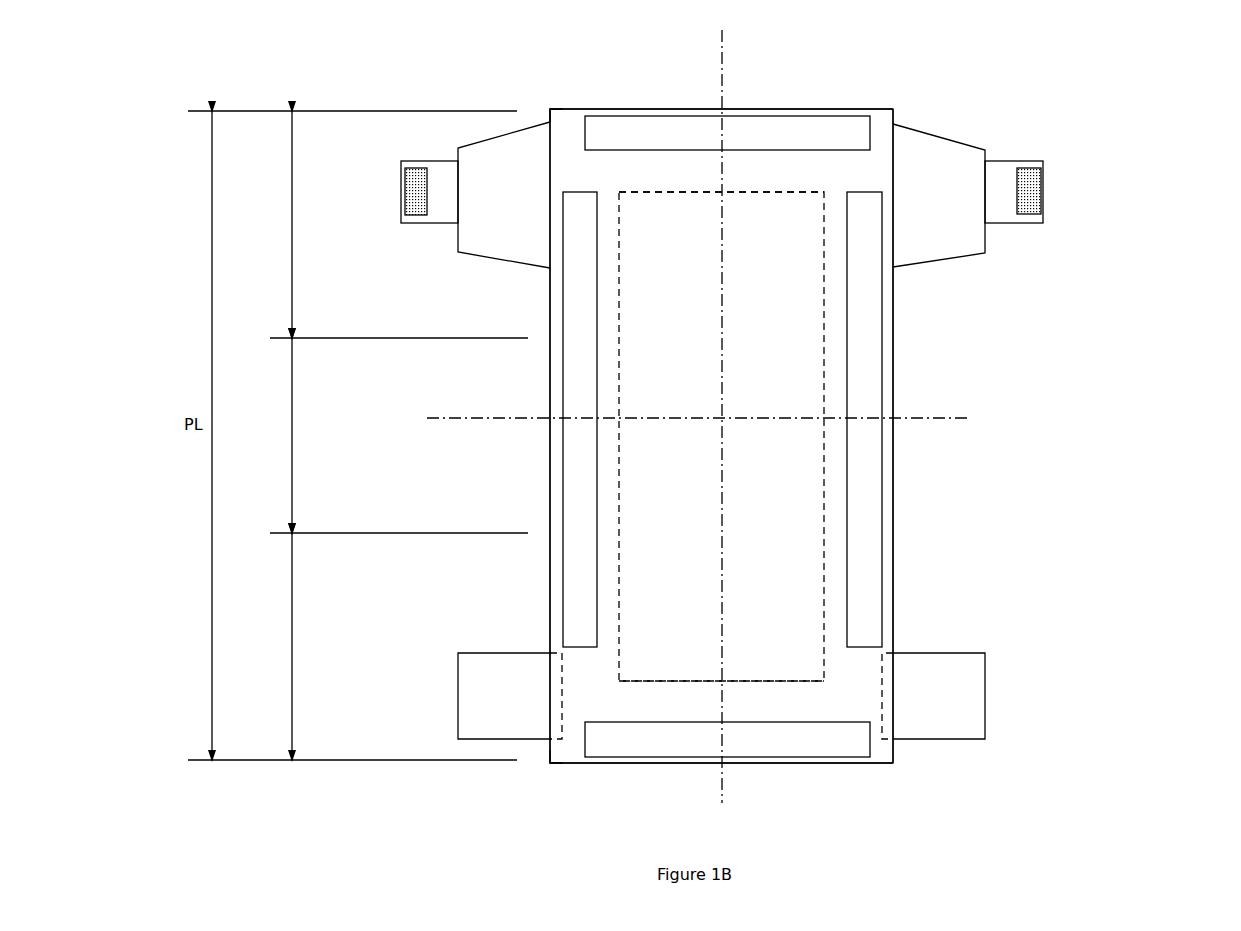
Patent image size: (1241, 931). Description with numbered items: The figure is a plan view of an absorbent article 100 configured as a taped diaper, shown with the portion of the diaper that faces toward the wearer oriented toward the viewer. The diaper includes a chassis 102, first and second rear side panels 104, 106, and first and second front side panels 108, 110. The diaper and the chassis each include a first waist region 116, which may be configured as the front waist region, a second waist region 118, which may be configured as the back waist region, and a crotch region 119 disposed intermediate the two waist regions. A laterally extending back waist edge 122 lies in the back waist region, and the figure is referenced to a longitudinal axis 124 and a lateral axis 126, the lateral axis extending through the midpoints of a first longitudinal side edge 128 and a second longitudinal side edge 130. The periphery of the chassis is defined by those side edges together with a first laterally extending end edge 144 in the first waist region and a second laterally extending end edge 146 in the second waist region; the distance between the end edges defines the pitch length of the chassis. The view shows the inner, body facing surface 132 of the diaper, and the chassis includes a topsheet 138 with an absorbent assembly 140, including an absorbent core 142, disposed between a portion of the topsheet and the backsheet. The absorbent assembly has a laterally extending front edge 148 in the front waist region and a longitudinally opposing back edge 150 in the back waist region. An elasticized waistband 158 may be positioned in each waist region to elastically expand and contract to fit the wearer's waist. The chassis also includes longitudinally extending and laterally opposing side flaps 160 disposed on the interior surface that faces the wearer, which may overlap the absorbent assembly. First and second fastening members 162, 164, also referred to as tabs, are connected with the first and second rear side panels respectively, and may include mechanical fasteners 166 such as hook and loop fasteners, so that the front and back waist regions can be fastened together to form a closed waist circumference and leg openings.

The absorbent article 100 is at (1053, 362).
The chassis 102 is at (893, 626).
The first rear side panel 104 is at (493, 214).
The second rear side panel 106 is at (927, 169).
The first front side panel 108 is at (493, 680).
The second front side panel 110 is at (915, 713).
The first waist region 116 is at (270, 646).
The second waist region 118 is at (388, 224).
The crotch region 119 is at (388, 435).
The back waist edge 122 is at (618, 112).
The longitudinal axis 124 is at (722, 794).
The lateral axis 126 is at (925, 418).
The first longitudinal side edge 128 is at (548, 325).
The second longitudinal side edge 130 is at (893, 328).
The body facing surface 132 is at (639, 436).
The topsheet 138 is at (636, 372).
The absorbent assembly 140 is at (752, 379).
The absorbent core 142 is at (768, 225).
The first laterally extending end edge 144 is at (608, 762).
The second laterally extending end edge 146 is at (562, 112).
The front edge 148 is at (790, 681).
The back edge 150 is at (700, 192).
The elasticized waistband 158 is at (743, 123).
The side flaps 160 is at (575, 497).
The first fastening member 162 is at (998, 170).
The second fastening member 164 is at (435, 172).
The mechanical fasteners 166 is at (418, 177).